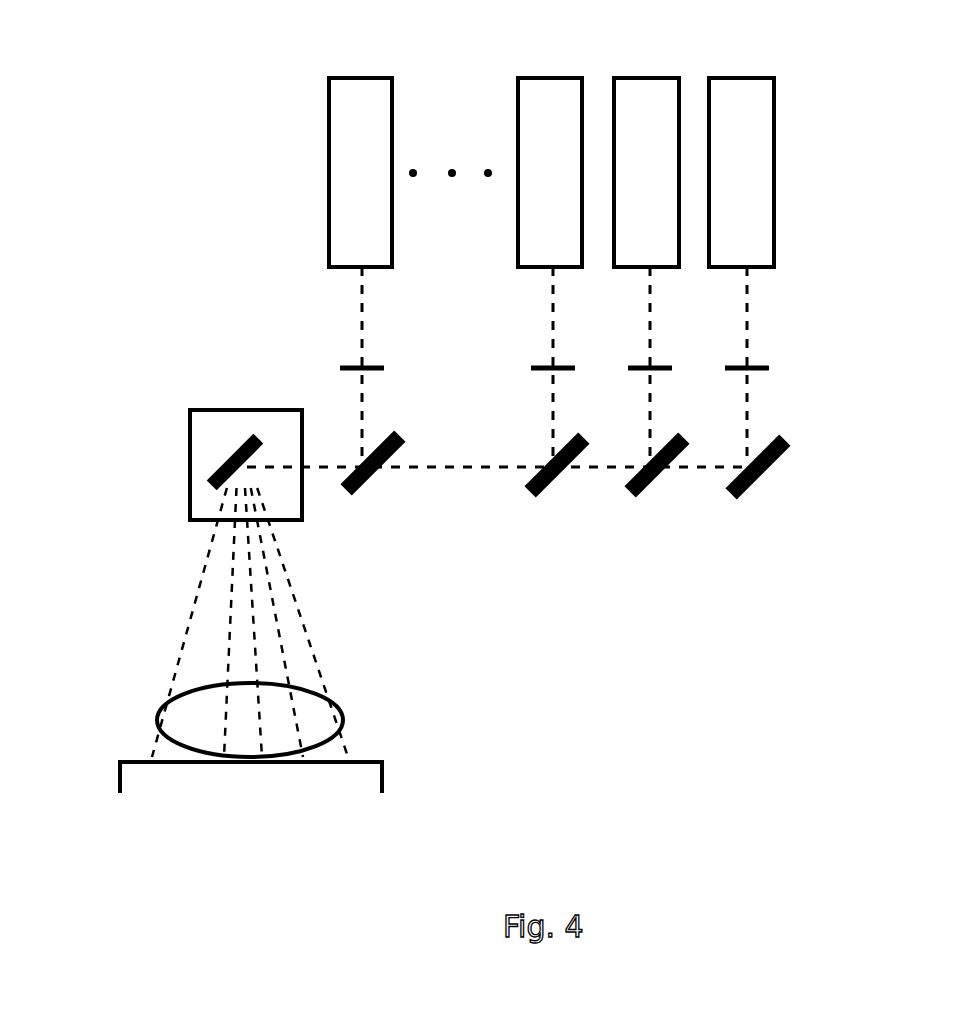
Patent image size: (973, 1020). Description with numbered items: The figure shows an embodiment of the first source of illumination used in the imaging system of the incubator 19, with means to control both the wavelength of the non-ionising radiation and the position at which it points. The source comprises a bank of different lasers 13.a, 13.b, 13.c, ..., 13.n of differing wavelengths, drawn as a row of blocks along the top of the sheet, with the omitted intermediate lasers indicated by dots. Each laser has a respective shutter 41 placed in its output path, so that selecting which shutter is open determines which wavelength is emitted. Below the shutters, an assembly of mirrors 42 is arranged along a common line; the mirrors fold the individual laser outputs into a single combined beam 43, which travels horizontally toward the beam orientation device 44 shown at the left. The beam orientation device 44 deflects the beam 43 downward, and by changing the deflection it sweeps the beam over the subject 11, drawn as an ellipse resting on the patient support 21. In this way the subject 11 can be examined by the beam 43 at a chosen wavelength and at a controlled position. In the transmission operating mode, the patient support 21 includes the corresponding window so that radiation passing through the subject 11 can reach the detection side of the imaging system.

The incubator 19 is at (506, 460).
The laser n 13.n is at (353, 145).
The laser c 13.c is at (543, 145).
The laser b 13.b is at (639, 145).
The laser a 13.a is at (732, 145).
The shutters 41 is at (790, 387).
The assembly of mirrors 42 is at (759, 516).
The beam 43 is at (458, 487).
The beam orientation device 44 is at (237, 384).
The subject 11 is at (371, 720).
The patient support 21 is at (400, 807).